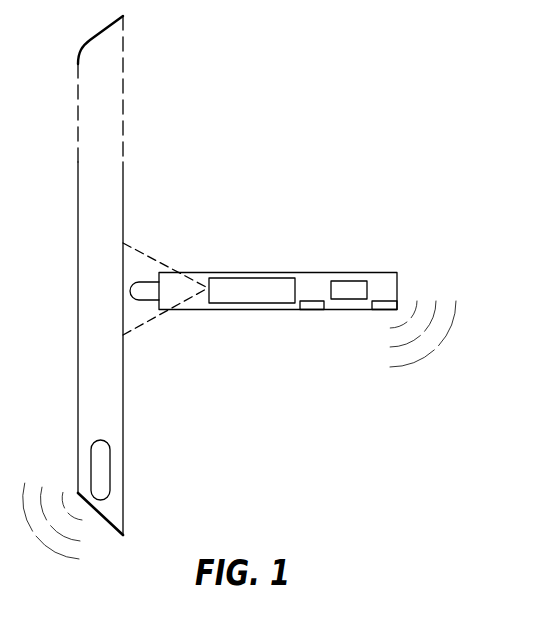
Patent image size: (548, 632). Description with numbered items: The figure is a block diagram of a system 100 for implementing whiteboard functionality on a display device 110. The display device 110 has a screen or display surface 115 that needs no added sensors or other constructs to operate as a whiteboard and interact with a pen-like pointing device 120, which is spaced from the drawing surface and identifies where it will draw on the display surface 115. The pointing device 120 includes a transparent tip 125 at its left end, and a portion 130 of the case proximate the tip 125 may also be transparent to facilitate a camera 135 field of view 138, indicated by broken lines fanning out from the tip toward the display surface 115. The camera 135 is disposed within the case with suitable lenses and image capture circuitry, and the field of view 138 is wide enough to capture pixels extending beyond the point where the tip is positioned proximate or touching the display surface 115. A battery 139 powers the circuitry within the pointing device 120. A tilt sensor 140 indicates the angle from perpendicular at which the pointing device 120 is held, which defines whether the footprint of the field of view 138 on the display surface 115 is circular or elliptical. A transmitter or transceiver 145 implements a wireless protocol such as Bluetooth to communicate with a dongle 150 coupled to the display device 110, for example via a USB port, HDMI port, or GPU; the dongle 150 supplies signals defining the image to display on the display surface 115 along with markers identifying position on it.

The system 100 is at (372, 55).
The display device 110 is at (96, 38).
The display surface 115 is at (78, 291).
The pointing device 120 is at (271, 272).
The transparent tip 125 is at (146, 289).
The transparent portion of the case 130 is at (171, 283).
The camera 135 is at (251, 311).
The field of view 138 is at (152, 319).
The battery 139 is at (312, 306).
The tilt sensor 140 is at (349, 281).
The transceiver 145 is at (386, 300).
The dongle 150 is at (111, 469).